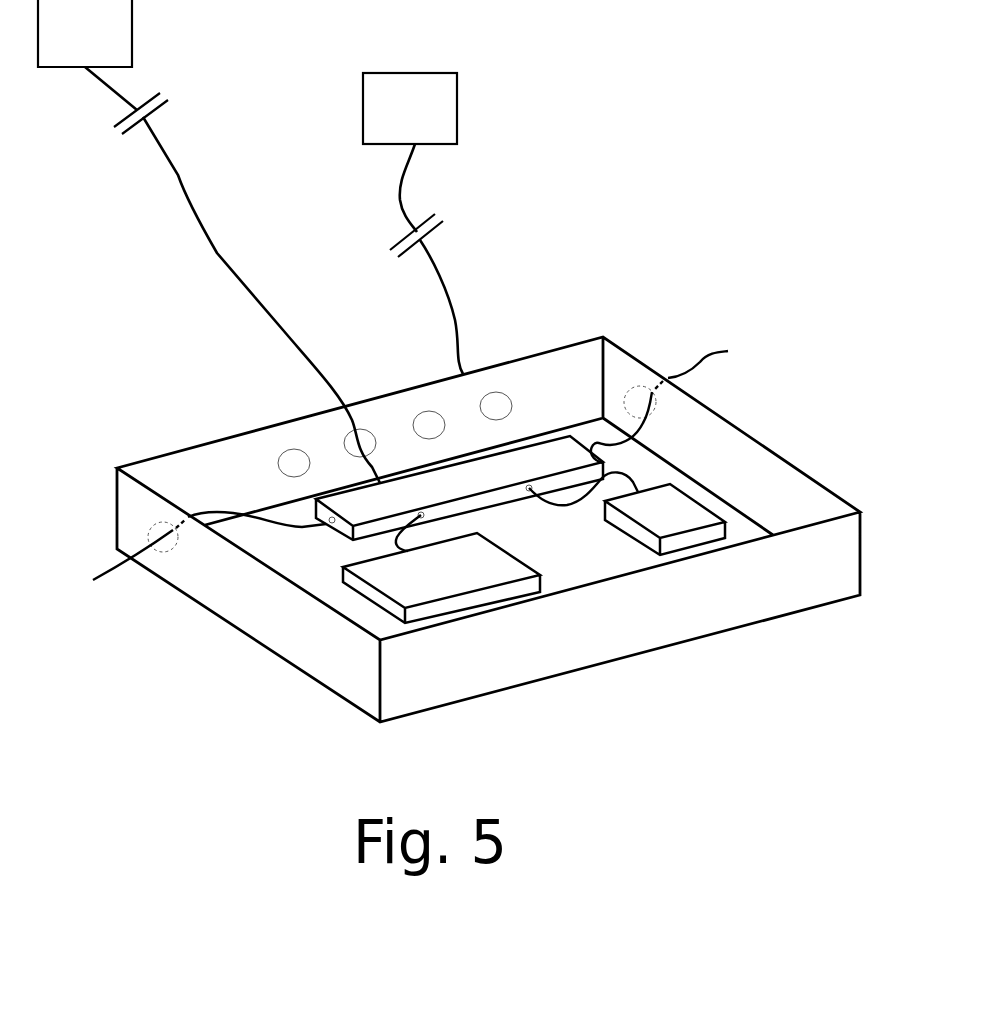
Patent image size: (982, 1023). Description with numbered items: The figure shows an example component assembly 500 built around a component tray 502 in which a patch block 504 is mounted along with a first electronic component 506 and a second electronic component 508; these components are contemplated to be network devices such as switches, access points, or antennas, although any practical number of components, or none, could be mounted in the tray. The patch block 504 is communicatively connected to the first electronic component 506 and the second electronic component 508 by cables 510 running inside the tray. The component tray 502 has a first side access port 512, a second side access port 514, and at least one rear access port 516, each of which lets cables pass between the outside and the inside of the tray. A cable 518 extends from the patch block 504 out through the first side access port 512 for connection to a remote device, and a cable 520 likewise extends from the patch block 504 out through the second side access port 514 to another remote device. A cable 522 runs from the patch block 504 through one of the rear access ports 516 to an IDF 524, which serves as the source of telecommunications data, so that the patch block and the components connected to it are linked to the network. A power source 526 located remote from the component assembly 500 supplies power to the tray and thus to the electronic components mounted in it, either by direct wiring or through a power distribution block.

The component assembly 500 is at (622, 162).
The component tray 502 is at (333, 667).
The patch block 504 is at (459, 488).
The first electronic component 506 is at (441, 578).
The second electronic component 508 is at (665, 519).
The cables 510 is at (402, 532).
The first side access port 512 is at (147, 530).
The second side access port 514 is at (642, 388).
The rear access port 516 is at (507, 392).
The cable 518 is at (118, 565).
The cable 520 is at (707, 363).
The cable 522 is at (183, 218).
The IDF 524 is at (85, 33).
The power source 526 is at (413, 223).